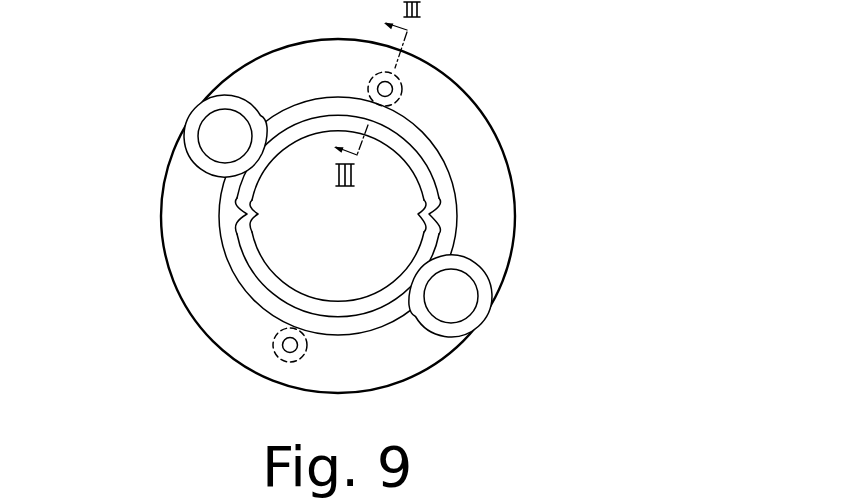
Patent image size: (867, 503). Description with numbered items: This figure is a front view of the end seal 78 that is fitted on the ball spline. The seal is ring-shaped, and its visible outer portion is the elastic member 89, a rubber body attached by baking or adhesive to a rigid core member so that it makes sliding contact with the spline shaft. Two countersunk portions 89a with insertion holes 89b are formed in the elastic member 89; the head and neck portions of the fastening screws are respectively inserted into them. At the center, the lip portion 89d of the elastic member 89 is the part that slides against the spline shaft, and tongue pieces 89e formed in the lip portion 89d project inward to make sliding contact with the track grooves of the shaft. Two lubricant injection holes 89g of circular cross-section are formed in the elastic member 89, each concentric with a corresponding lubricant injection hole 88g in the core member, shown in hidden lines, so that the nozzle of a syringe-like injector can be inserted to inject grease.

The end seal 78 is at (155, 165).
The elastic member 89 is at (210, 275).
The countersunk portion 89a is at (218, 91).
The insertion hole 89b is at (223, 112).
The lip portion 89d is at (425, 182).
The tongue piece 89e is at (250, 214).
The lubricant injection hole 89g is at (396, 97).
The lubricant injection hole 88g is at (403, 88).